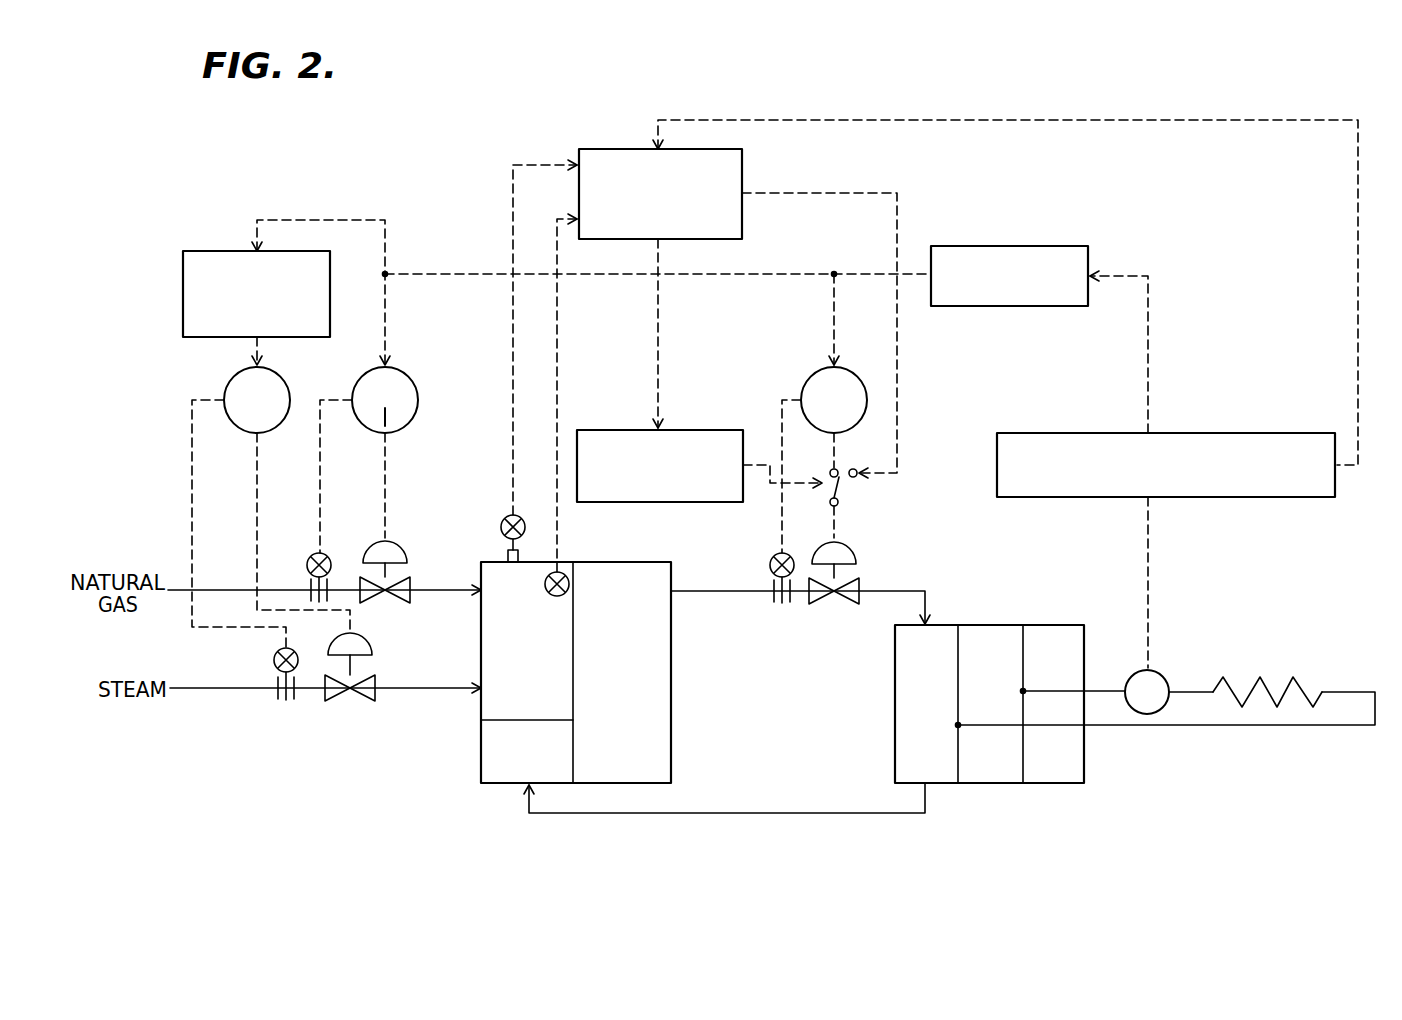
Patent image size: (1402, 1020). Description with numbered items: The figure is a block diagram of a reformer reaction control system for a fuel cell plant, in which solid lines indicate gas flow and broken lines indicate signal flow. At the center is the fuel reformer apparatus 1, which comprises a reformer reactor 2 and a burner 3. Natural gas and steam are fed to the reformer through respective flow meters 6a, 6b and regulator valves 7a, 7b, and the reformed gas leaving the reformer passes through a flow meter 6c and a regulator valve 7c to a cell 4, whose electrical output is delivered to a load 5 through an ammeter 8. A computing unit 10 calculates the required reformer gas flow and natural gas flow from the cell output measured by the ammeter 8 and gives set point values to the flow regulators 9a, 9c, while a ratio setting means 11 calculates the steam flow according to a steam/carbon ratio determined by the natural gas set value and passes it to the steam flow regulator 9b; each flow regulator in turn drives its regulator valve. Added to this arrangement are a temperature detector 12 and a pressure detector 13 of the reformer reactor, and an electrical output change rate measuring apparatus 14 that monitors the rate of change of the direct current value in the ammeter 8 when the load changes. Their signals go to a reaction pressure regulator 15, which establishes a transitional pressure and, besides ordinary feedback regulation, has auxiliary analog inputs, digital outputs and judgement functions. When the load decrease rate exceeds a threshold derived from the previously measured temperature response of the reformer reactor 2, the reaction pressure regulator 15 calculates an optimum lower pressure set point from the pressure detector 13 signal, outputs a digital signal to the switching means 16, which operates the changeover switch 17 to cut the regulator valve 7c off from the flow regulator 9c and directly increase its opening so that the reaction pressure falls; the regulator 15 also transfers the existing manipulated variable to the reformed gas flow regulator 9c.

The fuel reformer apparatus 1 is at (645, 561).
The reformer reactor 2 is at (527, 572).
The burner 3 is at (500, 767).
The cell 4 is at (990, 626).
The load 5 is at (1253, 678).
The flow meter 6a is at (310, 556).
The flow meter 6b is at (274, 660).
The flow meter 6c is at (770, 565).
The regulator valve 7a is at (407, 547).
The regulator valve 7b is at (361, 702).
The regulator valve 7c is at (845, 604).
The ammeter 8 is at (1170, 678).
The flow regulator 9a is at (418, 398).
The flow regulator 9b is at (228, 385).
The flow regulator 9c is at (812, 376).
The computing unit 10 is at (1001, 246).
The ratio setting means 11 is at (217, 250).
The temperature detector 12 is at (556, 597).
The pressure detector 13 is at (501, 519).
The electrical output change rate measuring apparatus 14 is at (1201, 433).
The reaction pressure regulator 15 is at (744, 165).
The switching means 16 is at (698, 431).
The changeover switch 17 is at (840, 486).